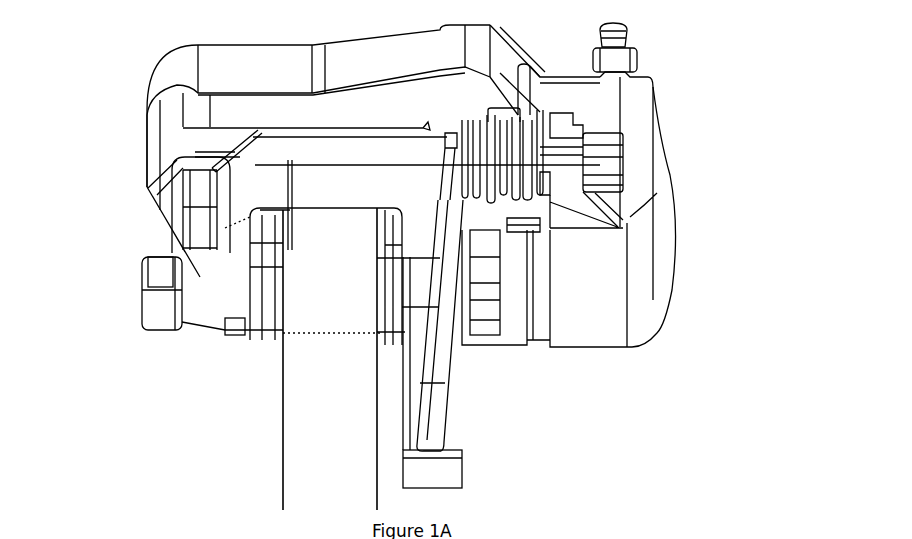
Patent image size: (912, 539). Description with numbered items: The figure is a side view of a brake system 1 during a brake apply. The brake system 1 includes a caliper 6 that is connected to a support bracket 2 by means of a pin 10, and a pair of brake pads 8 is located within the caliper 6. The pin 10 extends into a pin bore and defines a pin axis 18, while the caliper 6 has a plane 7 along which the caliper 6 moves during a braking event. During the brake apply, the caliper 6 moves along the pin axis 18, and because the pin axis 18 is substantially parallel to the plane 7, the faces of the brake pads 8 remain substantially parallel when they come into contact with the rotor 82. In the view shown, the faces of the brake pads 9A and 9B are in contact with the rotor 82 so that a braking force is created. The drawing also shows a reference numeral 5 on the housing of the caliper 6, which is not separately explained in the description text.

The brake system 1 is at (692, 46).
The support bracket 2 is at (155, 303).
The caliper housing 5 is at (655, 305).
The caliper 6 is at (155, 160).
The plane 7 is at (198, 91).
The brake pads 8 is at (373, 330).
The face of brake pad 9A is at (322, 183).
The face of brake pad 9B is at (343, 173).
The pin 10 is at (605, 185).
The pin axis 18 is at (255, 160).
The rotor 82 is at (315, 473).